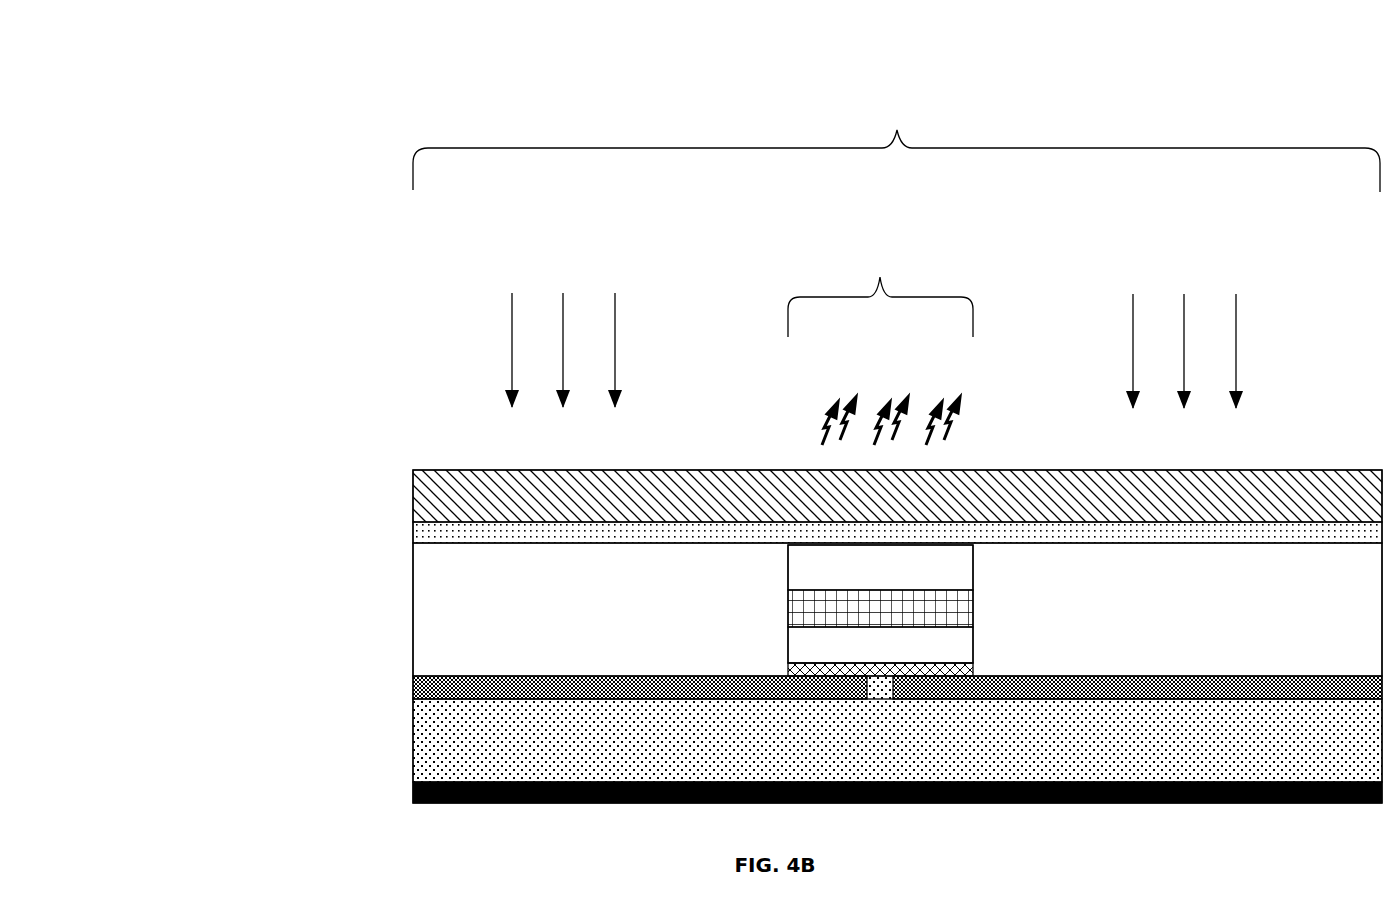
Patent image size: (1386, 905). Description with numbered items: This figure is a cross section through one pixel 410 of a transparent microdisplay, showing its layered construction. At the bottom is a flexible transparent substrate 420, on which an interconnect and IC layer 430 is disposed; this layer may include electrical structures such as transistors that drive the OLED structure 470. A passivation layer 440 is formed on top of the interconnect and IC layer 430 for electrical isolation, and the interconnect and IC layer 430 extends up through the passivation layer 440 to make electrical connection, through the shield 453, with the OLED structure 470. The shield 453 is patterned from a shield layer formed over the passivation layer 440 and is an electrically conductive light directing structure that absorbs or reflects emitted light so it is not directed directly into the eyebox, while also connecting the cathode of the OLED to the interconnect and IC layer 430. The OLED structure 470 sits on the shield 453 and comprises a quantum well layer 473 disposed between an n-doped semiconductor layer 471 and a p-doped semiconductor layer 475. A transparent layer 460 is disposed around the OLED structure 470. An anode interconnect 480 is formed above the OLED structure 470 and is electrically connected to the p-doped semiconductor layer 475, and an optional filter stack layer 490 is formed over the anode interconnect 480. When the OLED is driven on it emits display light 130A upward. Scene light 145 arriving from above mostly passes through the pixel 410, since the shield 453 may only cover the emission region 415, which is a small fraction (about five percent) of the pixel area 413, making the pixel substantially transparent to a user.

The pixel area 413 is at (896, 139).
The emission region 415 is at (880, 276).
The pixel 410 is at (302, 358).
The scene light 145 is at (875, 350).
The display light 130A is at (790, 405).
The filter stack layer 490 is at (432, 495).
The anode interconnect 480 is at (430, 531).
The transparent layer 460 is at (897, 609).
The OLED structure 470 is at (782, 604).
The p-doped semiconductor layer 475 is at (880, 567).
The quantum well layer 473 is at (815, 606).
The n-doped semiconductor layer 471 is at (880, 645).
The shield 453 is at (790, 668).
The passivation layer 440 is at (428, 687).
The interconnect and IC layer 430 is at (440, 761).
The flexible transparent substrate 420 is at (413, 795).